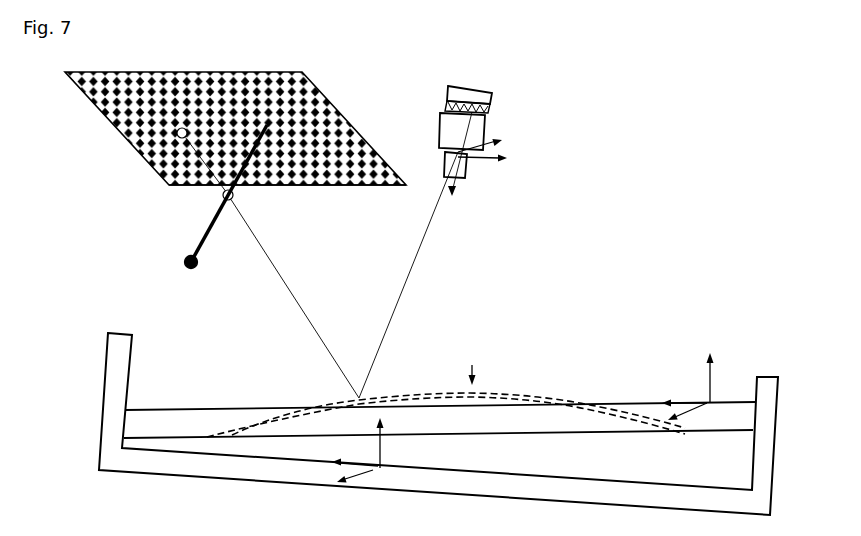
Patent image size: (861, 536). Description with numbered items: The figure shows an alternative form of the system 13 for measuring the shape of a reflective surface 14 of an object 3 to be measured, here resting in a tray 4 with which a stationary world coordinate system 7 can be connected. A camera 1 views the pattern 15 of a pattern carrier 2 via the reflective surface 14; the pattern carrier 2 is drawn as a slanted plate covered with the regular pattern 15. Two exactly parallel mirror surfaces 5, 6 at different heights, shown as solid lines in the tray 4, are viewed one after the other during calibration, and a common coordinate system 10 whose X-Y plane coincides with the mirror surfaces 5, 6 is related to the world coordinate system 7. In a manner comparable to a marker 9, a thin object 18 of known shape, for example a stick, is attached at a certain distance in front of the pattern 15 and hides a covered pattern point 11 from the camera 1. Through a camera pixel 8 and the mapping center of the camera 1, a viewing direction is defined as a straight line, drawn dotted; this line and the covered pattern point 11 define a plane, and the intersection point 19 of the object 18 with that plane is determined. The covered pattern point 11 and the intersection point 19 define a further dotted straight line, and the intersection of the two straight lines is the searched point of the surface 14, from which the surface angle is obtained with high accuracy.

The camera 1 is at (463, 158).
The pattern carrier 2 is at (235, 129).
The object 3 is at (628, 408).
The tray 4 is at (768, 400).
The mirror surface 5 is at (163, 403).
The mirror surface 6 is at (148, 433).
The world coordinate system 7 is at (363, 477).
The camera pixel 8 is at (489, 103).
The marker 9 is at (203, 268).
The common coordinate system 10 is at (702, 393).
The covered pattern point 11 is at (177, 137).
The system 13 is at (658, 115).
The reflective surface 14 is at (470, 364).
The pattern 15 is at (281, 193).
The thin object 18 is at (208, 235).
The intersection point 19 is at (234, 196).